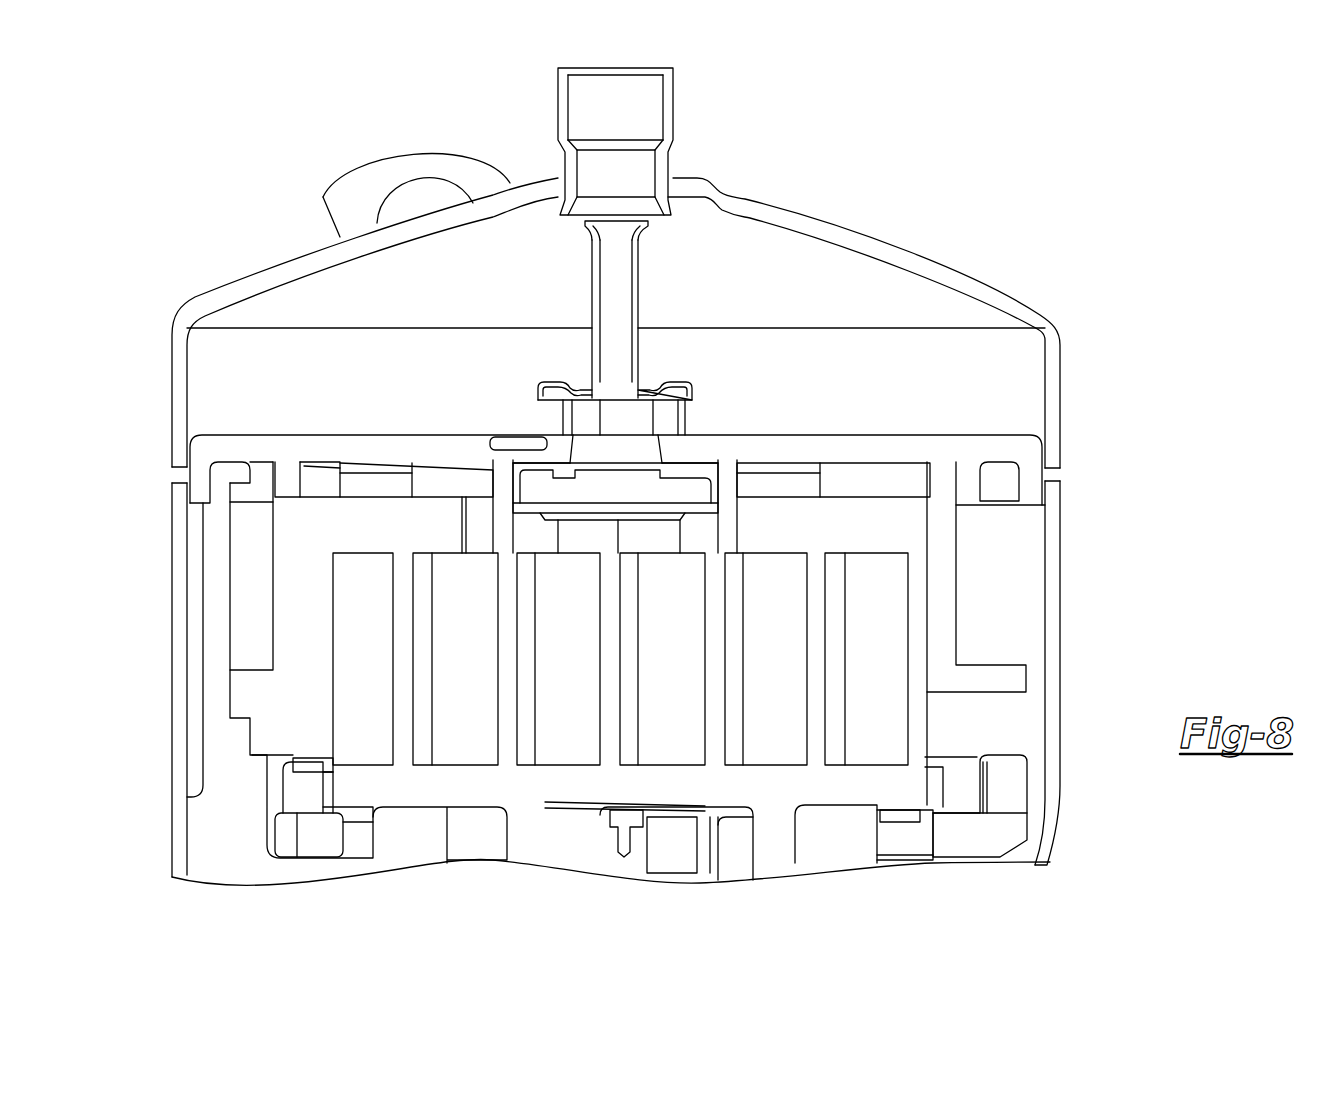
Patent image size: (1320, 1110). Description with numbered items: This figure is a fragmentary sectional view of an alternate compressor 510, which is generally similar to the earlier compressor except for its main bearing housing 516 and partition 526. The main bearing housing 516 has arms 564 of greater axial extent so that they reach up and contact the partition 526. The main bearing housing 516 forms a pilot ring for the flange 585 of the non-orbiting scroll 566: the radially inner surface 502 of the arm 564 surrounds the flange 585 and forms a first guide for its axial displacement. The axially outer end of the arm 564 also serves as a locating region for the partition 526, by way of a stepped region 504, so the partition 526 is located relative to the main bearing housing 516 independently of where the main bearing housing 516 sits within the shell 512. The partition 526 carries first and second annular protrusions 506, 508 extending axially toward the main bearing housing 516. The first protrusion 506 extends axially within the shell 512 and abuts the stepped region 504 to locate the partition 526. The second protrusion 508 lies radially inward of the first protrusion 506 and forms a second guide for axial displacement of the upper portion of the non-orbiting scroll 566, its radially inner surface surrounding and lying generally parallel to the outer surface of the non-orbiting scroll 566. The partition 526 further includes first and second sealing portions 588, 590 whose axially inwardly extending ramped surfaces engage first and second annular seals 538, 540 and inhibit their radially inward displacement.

The compressor 510 is at (198, 172).
The radially inner surface 502 is at (235, 705).
The stepped region 504 is at (210, 500).
The first annular protrusion 506 is at (1035, 495).
The second annular protrusion 508 is at (967, 475).
The shell 512 is at (1058, 797).
The main bearing housing 516 is at (205, 832).
The partition 526 is at (870, 435).
The first annular seal 538 is at (690, 467).
The second annular seal 540 is at (320, 460).
The arm 564 is at (200, 595).
The non-orbiting scroll 566 is at (930, 535).
The flange 585 is at (243, 665).
The first sealing portion 588 is at (575, 470).
The second sealing portion 590 is at (405, 467).